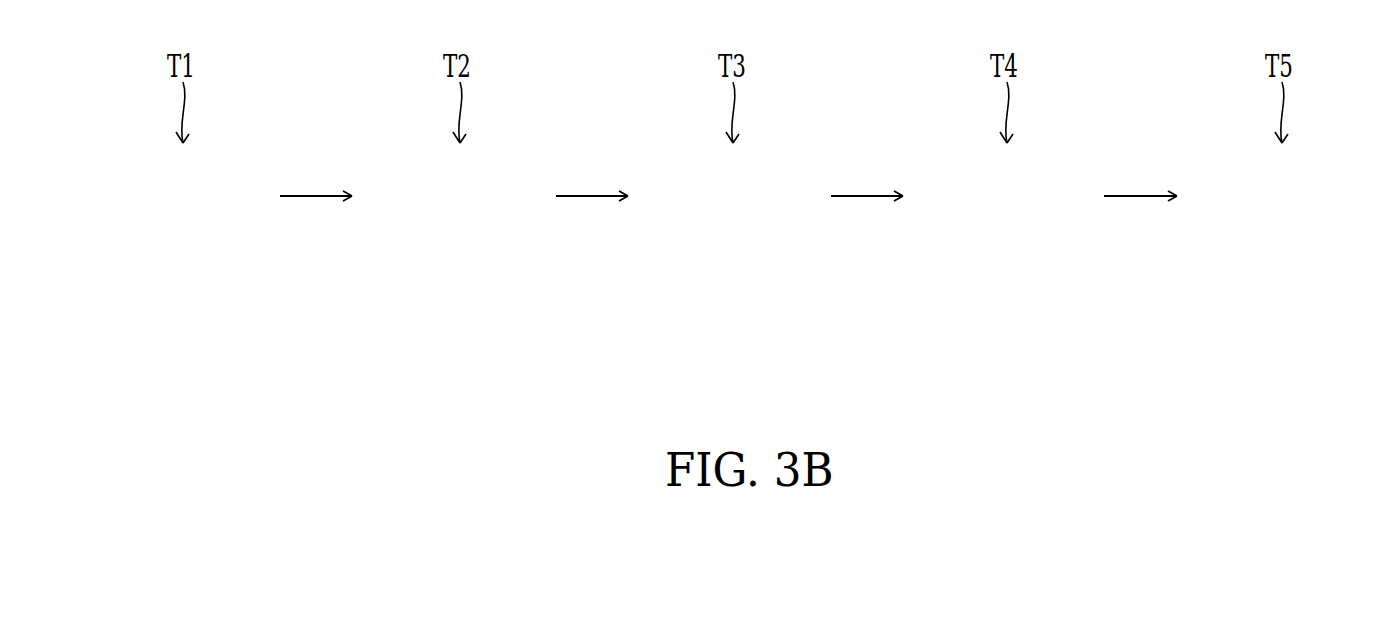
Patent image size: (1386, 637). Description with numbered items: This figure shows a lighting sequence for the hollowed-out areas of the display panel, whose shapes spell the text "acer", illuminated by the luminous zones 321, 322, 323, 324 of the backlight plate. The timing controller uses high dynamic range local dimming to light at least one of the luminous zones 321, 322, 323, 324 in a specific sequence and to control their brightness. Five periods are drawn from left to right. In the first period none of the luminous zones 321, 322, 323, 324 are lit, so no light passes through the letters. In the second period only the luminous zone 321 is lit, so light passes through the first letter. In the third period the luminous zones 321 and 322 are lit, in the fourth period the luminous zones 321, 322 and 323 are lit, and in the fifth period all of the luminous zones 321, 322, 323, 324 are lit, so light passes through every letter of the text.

The luminous zone 321 is at (1212, 225).
The luminous zone 322 is at (1260, 225).
The luminous zone 323 is at (1315, 225).
The luminous zone 324 is at (1353, 225).